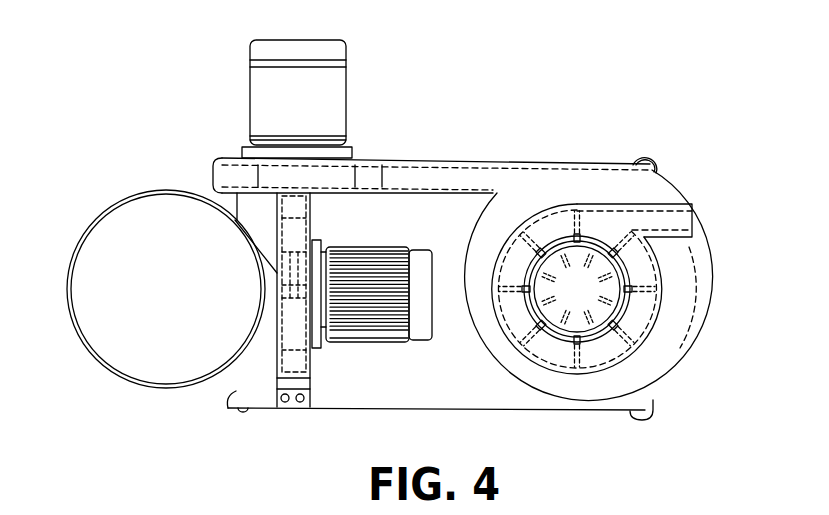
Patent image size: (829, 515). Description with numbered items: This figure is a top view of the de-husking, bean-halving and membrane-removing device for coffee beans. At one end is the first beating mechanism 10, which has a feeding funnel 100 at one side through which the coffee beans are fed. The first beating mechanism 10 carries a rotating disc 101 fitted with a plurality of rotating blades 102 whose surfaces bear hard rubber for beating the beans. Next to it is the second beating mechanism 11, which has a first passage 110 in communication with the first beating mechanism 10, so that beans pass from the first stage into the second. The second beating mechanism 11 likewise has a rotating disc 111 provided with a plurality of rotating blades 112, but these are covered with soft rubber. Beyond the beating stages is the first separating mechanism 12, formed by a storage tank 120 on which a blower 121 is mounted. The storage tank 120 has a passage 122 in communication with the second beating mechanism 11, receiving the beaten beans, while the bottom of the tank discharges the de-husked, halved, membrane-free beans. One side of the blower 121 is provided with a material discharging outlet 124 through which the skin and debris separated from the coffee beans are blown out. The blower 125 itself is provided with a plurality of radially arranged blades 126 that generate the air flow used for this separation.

The first beating mechanism 10 is at (127, 405).
The second beating mechanism 11 is at (372, 128).
The first separating mechanism 12 is at (623, 228).
The feeding funnel 100 is at (126, 230).
The rotating disc 101 is at (306, 360).
The rotating blades 102 is at (290, 341).
The first passage 110 is at (297, 205).
The rotating disc 111 is at (235, 158).
The rotating blades 112 is at (232, 178).
The storage tank 120 is at (693, 275).
The blower 121 is at (653, 343).
The passage 122 is at (417, 177).
The material discharging outlet 124 is at (683, 207).
The blower 125 is at (620, 347).
The radially arranged blades 126 is at (617, 320).